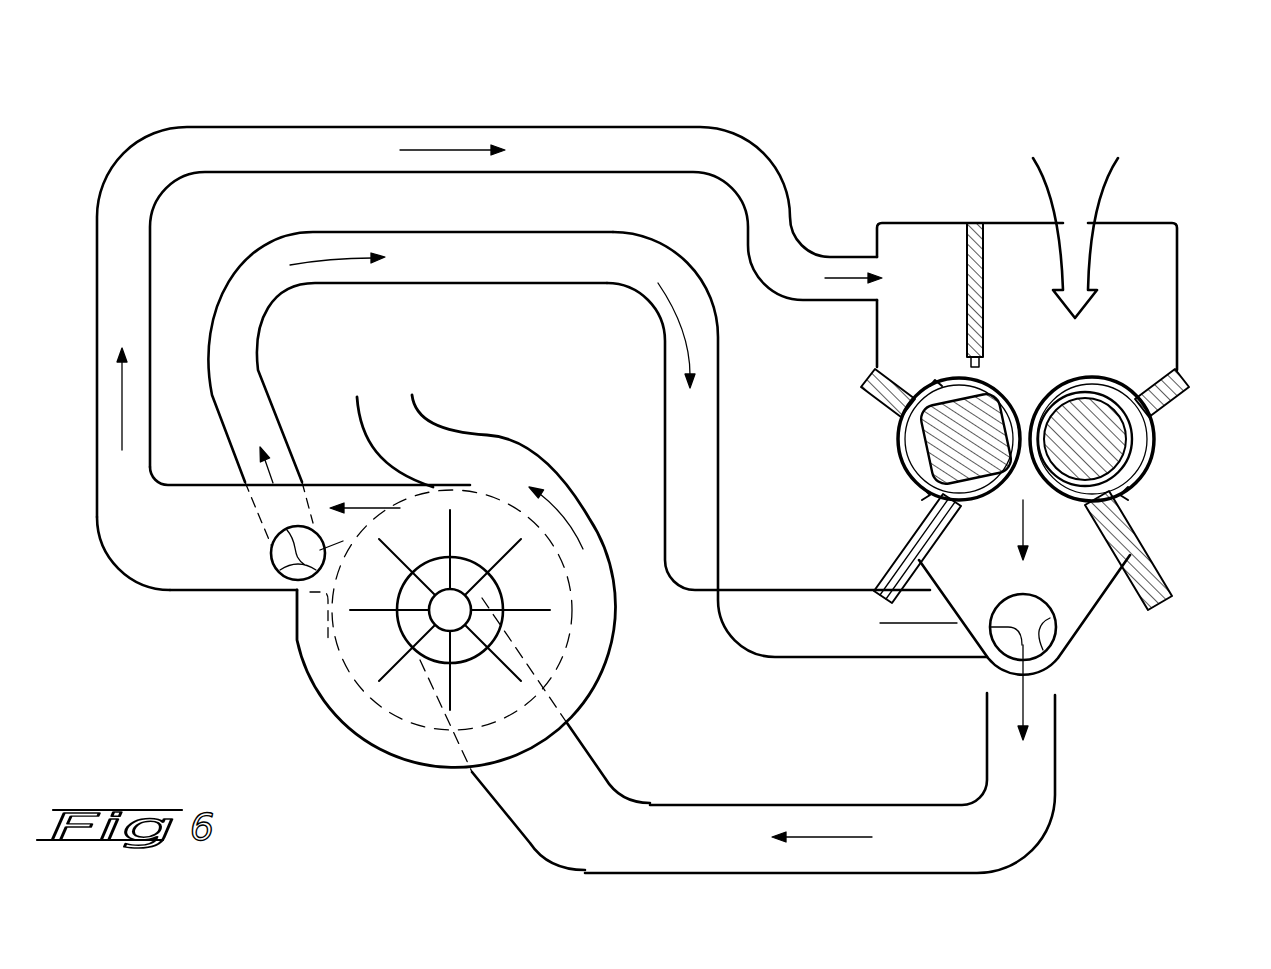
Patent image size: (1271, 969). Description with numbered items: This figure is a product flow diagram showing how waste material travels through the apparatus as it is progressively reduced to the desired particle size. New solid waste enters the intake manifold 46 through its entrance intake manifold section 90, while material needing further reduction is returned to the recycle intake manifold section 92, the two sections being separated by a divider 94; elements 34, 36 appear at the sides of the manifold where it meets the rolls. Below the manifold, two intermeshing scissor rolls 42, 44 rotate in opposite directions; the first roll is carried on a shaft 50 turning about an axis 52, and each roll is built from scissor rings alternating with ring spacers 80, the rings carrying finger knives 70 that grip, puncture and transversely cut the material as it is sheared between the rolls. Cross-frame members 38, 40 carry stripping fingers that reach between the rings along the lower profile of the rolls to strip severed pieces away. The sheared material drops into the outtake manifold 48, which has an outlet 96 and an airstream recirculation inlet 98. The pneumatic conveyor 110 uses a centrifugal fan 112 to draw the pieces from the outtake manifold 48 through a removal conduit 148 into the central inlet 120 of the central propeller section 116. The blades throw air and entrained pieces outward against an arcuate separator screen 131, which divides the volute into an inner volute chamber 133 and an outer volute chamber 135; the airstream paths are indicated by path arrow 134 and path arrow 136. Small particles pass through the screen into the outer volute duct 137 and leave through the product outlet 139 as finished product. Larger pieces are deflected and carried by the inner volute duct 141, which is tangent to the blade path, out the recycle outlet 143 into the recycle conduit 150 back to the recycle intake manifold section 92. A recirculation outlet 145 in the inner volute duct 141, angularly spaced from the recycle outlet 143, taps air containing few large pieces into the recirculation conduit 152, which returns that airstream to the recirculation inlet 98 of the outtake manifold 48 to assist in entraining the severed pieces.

The pneumatic conveyor 110 is at (570, 75).
The recycle conduit 150 is at (358, 123).
The recirculation conduit 152 is at (482, 218).
The removal conduit 148 is at (878, 875).
The centrifugal fan 112 is at (405, 772).
The central propeller section 116 is at (453, 537).
The central inlet 120 is at (398, 630).
The separator screen 131 is at (342, 727).
The inner volute chamber 133 is at (547, 635).
The path arrow 134 is at (367, 505).
The outer volute chamber 135 is at (573, 687).
The path arrow 136 is at (560, 510).
The outer volute duct 137 is at (440, 427).
The product outlet 139 is at (377, 402).
The inner volute duct 141 is at (205, 592).
The recycle outlet 143 is at (183, 582).
The recirculation outlet 145 is at (277, 570).
The intake manifold 46 is at (1140, 290).
The entrance intake manifold section 90 is at (1148, 265).
The recycle intake manifold section 92 is at (940, 318).
The divider 94 is at (975, 278).
The first nozzle 34 is at (890, 400).
The second nozzle 36 is at (1170, 402).
The finger knives 70 is at (933, 386).
The shaft 50 is at (960, 443).
The axis 52 is at (1093, 445).
The ring spacers 80 is at (1097, 403).
The scissor roll 42 is at (915, 478).
The scissor roll 44 is at (1133, 477).
The cross-frame member 38 is at (908, 562).
The cross-frame member 40 is at (1145, 575).
The outtake manifold 48 is at (1073, 605).
The airstream recirculation inlet 98 is at (1073, 648).
The outlet 96 is at (987, 693).